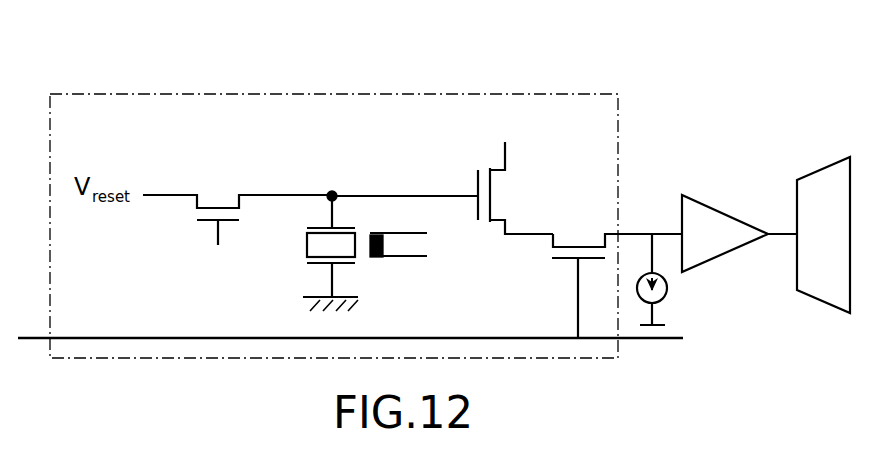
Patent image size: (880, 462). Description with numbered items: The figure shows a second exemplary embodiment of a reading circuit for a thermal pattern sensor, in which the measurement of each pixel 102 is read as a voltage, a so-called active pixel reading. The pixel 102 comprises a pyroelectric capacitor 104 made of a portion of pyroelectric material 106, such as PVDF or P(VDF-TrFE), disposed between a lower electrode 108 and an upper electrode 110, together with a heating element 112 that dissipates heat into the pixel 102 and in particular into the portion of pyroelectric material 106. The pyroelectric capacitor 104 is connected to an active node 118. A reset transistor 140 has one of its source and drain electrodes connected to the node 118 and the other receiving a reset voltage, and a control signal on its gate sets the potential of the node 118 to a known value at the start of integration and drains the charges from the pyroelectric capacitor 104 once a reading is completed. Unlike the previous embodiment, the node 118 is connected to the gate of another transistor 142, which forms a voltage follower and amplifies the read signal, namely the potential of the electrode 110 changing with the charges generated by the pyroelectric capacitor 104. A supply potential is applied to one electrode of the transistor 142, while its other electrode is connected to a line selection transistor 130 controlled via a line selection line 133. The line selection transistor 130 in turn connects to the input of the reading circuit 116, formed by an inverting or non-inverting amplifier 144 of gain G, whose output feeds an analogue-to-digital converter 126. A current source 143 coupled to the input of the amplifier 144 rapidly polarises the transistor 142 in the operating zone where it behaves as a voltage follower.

The pixel 102 is at (556, 93).
The pyroelectric capacitor 104 is at (299, 281).
The portion of pyroelectric material 106 is at (350, 255).
The lower electrode 108 is at (318, 266).
The upper electrode 110 is at (318, 228).
The heating element 112 is at (385, 246).
The reading circuit 116 is at (768, 184).
The active node 118 is at (334, 190).
The analogue-to-digital converter 126 is at (828, 180).
The line selection transistor 130 is at (580, 236).
The line selection line 133 is at (497, 338).
The reset transistor 140 is at (217, 190).
The transistor 142 is at (517, 183).
The current source 143 is at (667, 292).
The amplifier 144 is at (722, 215).